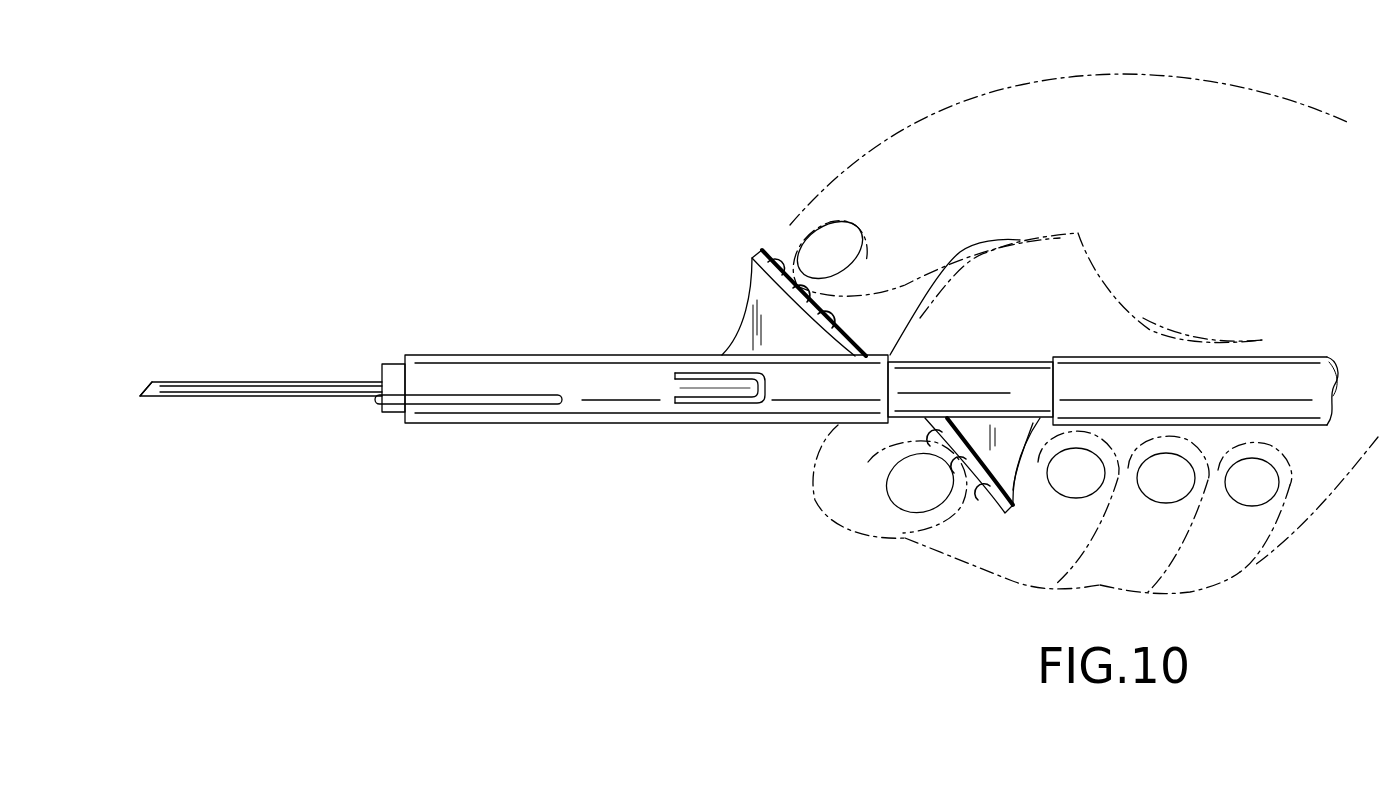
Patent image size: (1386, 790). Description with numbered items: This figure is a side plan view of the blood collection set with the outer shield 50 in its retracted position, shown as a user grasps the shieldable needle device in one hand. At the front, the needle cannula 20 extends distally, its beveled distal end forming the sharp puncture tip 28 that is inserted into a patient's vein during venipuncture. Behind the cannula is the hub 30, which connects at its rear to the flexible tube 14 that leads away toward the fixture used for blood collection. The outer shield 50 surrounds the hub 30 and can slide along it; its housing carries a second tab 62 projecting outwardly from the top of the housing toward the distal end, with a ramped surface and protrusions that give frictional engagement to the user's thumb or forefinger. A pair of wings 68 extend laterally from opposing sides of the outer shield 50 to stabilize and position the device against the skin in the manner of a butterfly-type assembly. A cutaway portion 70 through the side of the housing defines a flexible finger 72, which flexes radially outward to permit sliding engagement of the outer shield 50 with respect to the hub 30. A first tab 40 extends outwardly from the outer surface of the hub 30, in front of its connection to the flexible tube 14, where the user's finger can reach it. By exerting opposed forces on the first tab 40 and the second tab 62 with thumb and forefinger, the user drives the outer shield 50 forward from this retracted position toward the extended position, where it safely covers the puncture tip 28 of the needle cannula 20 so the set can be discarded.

The flexible tube 14 is at (1290, 358).
The needle cannula 20 is at (256, 382).
The puncture tip 28 is at (142, 395).
The hub 30 is at (394, 364).
The first tab 40 is at (1008, 510).
The outer shield 50 is at (556, 356).
The second tab 62 is at (752, 278).
The wings 68 is at (378, 403).
The cutaway portion 70 is at (700, 375).
The flexible finger 72 is at (722, 397).